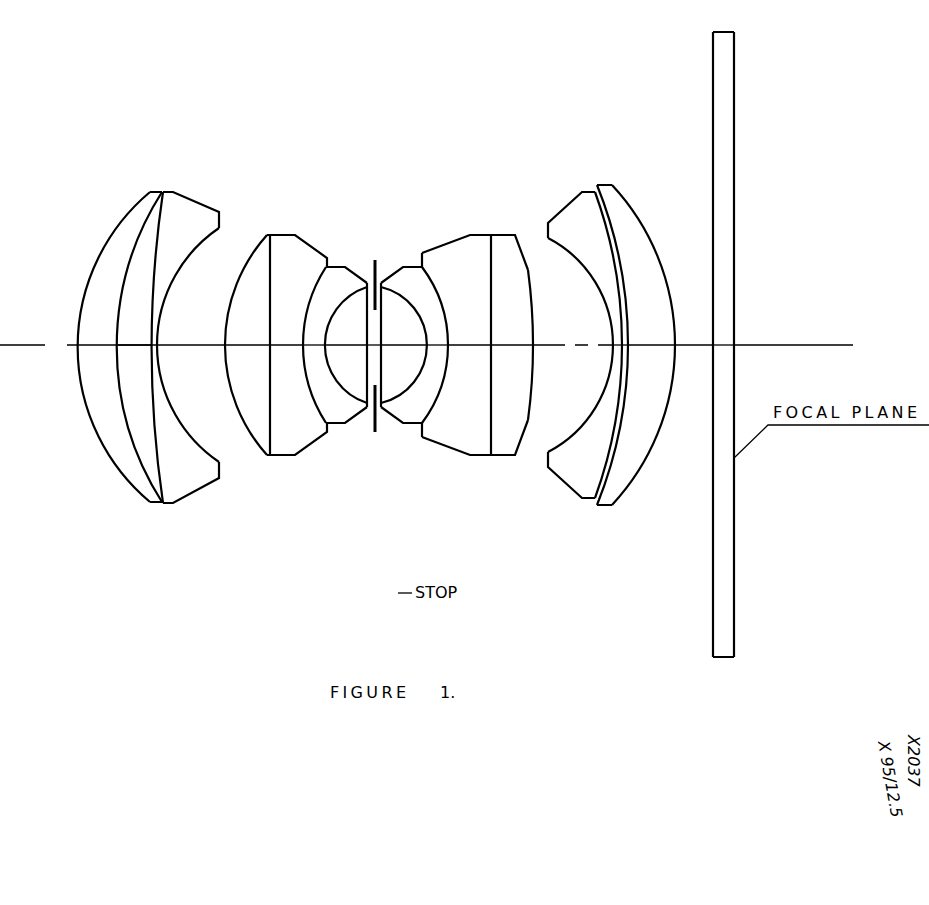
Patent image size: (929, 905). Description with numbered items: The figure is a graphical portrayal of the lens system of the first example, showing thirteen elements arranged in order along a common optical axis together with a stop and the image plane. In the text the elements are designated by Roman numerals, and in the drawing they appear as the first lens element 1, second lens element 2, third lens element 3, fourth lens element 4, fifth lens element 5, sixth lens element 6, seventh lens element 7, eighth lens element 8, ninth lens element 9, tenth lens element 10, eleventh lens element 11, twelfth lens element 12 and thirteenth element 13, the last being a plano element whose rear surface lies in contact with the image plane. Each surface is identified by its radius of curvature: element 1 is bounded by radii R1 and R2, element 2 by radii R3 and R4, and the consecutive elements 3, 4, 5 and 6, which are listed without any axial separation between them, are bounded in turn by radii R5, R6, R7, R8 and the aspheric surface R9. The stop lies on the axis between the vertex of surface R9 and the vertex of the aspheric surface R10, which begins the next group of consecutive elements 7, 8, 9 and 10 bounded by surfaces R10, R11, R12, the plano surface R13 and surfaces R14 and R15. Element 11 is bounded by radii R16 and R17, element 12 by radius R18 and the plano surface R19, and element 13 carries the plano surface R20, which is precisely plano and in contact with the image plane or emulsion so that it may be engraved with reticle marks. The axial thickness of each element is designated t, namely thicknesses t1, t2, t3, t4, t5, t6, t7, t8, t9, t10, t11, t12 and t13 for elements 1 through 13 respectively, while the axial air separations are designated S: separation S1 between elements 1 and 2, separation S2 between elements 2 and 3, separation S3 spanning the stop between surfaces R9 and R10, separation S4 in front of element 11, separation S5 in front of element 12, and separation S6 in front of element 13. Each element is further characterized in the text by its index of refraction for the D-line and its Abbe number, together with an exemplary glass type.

The first lens element 1 is at (105, 369).
The second lens element 2 is at (178, 366).
The third lens element 3 is at (251, 377).
The fourth lens element 4 is at (297, 360).
The fifth lens element 5 is at (335, 330).
The sixth lens element 6 is at (347, 339).
The seventh lens element 7 is at (418, 357).
The eighth lens element 8 is at (434, 337).
The ninth lens element 9 is at (470, 355).
The tenth lens element 10 is at (525, 376).
The eleventh lens element 11 is at (585, 374).
The twelfth lens element 12 is at (653, 371).
The thirteenth lens element 13 is at (745, 344).
The radius of curvature of first surface R1 is at (100, 440).
The radius of curvature of second surface R2 is at (142, 473).
The radius of curvature of third surface R3 is at (157, 467).
The radius of curvature of fourth surface R4 is at (198, 446).
The radius of curvature of fifth surface R5 is at (255, 443).
The radius of curvature of sixth surface R6 is at (270, 458).
The radius of curvature of seventh surface R7 is at (320, 413).
The radius of curvature of eighth surface R8 is at (352, 394).
The aspheric ninth surface R9 is at (366, 385).
The aspheric tenth surface R10 is at (382, 390).
The radius of curvature of eleventh surface R11 is at (410, 387).
The radius of curvature of twelfth surface R12 is at (441, 390).
The plano thirteenth surface R13 is at (490, 440).
The radius of curvature of fourteenth surface R14 is at (525, 440).
The radius of curvature of fifteenth surface R15 is at (560, 402).
The radius of curvature of sixteenth surface R16 is at (617, 404).
The radius of curvature of seventeenth surface R17 is at (623, 407).
The radius of curvature of eighteenth surface R18 is at (652, 447).
The plano nineteenth surface R19 is at (712, 524).
The plano twentieth surface R20 is at (734, 537).
The axial thickness of first element t1 is at (98, 345).
The axial thickness of second element t2 is at (153, 345).
The axial thickness of third element t3 is at (247, 345).
The axial thickness of fourth element t4 is at (287, 345).
The axial thickness of fifth element t5 is at (320, 345).
The axial thickness of sixth element t6 is at (350, 345).
The axial thickness of seventh element t7 is at (398, 345).
The axial thickness of eighth element t8 is at (436, 345).
The axial thickness of ninth element t9 is at (470, 345).
The axial thickness of tenth element t10 is at (510, 345).
The axial thickness of eleventh element t11 is at (616, 345).
The axial thickness of twelfth element t12 is at (657, 345).
The axial thickness of thirteenth element t13 is at (722, 345).
The first axial separation S1 is at (133, 345).
The second axial separation S2 is at (192, 345).
The third axial separation S3 is at (377, 345).
The fourth axial separation S4 is at (569, 345).
The fifth axial separation S5 is at (637, 345).
The sixth axial separation S6 is at (692, 345).